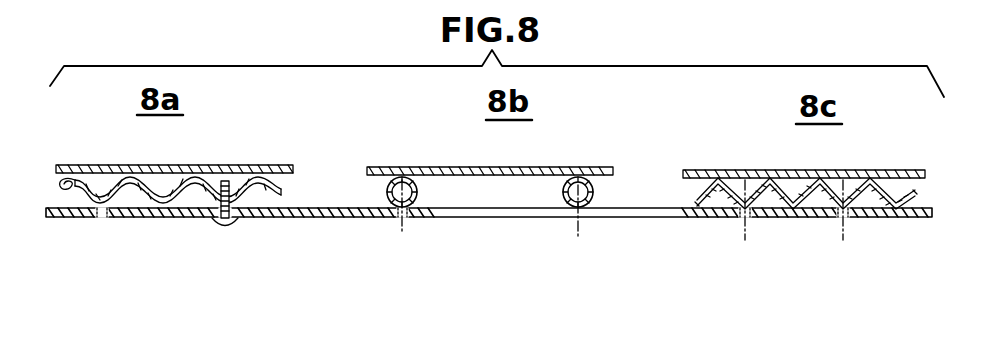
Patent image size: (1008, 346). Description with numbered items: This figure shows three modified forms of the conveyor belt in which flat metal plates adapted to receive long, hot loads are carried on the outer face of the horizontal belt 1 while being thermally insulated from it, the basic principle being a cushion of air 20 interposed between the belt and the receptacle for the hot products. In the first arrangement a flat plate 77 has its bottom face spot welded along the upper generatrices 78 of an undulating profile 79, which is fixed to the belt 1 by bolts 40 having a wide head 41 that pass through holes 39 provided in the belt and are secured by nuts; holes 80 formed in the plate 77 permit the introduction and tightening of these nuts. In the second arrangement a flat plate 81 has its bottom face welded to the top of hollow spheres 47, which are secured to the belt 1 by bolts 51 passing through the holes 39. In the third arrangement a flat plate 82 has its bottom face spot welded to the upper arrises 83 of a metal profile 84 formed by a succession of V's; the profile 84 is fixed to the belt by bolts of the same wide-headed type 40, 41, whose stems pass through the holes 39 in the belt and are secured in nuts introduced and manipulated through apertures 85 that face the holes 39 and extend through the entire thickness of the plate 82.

The horizontal belt 1 is at (649, 223).
The cushion of air 20 is at (508, 207).
The holes 39 is at (104, 216).
The bolts 40 is at (229, 184).
The wide head 41 is at (234, 226).
The hollow spheres 47 is at (398, 188).
The bolts 51 is at (404, 226).
The flat plate 77 is at (196, 164).
The upper generatrices 78 is at (66, 183).
The undulating profile 79 is at (273, 192).
The holes 80 is at (105, 166).
The flat plate 81 is at (506, 168).
The flat plate 82 is at (912, 172).
The upper arrises 83 is at (785, 168).
The metal profile 84 is at (926, 194).
The apertures 85 is at (842, 170).